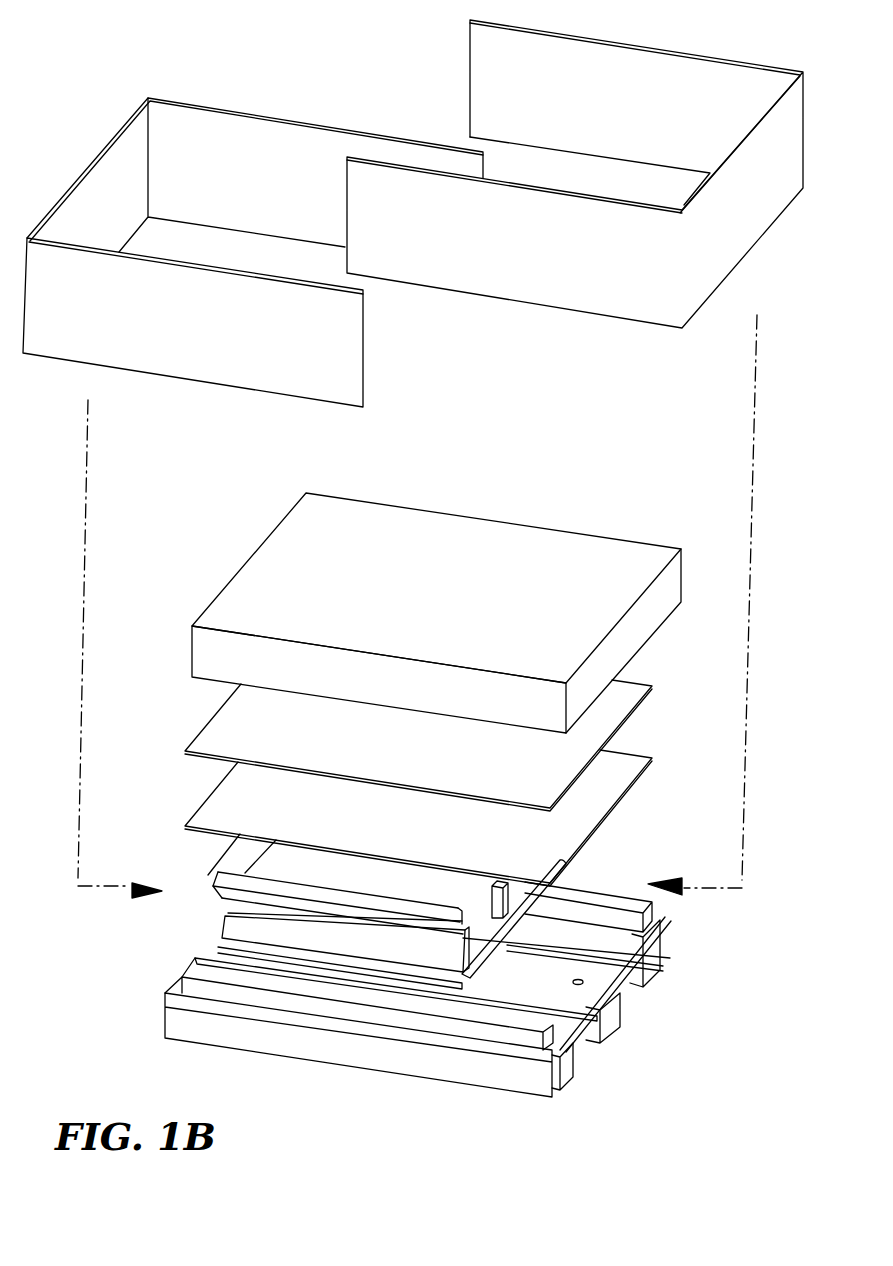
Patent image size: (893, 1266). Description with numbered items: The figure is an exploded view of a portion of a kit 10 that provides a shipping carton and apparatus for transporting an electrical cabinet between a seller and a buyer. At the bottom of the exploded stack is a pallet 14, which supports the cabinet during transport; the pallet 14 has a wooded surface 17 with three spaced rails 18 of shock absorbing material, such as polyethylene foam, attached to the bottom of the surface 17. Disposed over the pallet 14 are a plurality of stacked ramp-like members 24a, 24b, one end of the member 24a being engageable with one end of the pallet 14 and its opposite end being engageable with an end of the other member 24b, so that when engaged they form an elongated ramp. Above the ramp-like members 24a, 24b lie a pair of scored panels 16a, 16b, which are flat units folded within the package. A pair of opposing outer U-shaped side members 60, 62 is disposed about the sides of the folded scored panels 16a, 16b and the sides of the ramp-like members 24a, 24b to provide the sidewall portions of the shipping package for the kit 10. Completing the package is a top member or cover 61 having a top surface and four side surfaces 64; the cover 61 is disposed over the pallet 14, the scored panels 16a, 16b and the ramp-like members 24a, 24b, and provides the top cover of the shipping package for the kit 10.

The kit 10 is at (78, 110).
The pallet 14 is at (606, 979).
The scored panel 16a is at (375, 837).
The scored panel 16b is at (389, 758).
The wooded surface 17 is at (516, 986).
The rails 18 is at (663, 973).
The ramp-like member 24a is at (228, 862).
The ramp-like member 24b is at (258, 932).
The outer U-shaped side member 60 is at (210, 339).
The cover 61 is at (479, 531).
The outer U-shaped side member 62 is at (533, 273).
The side surfaces 64 is at (353, 694).